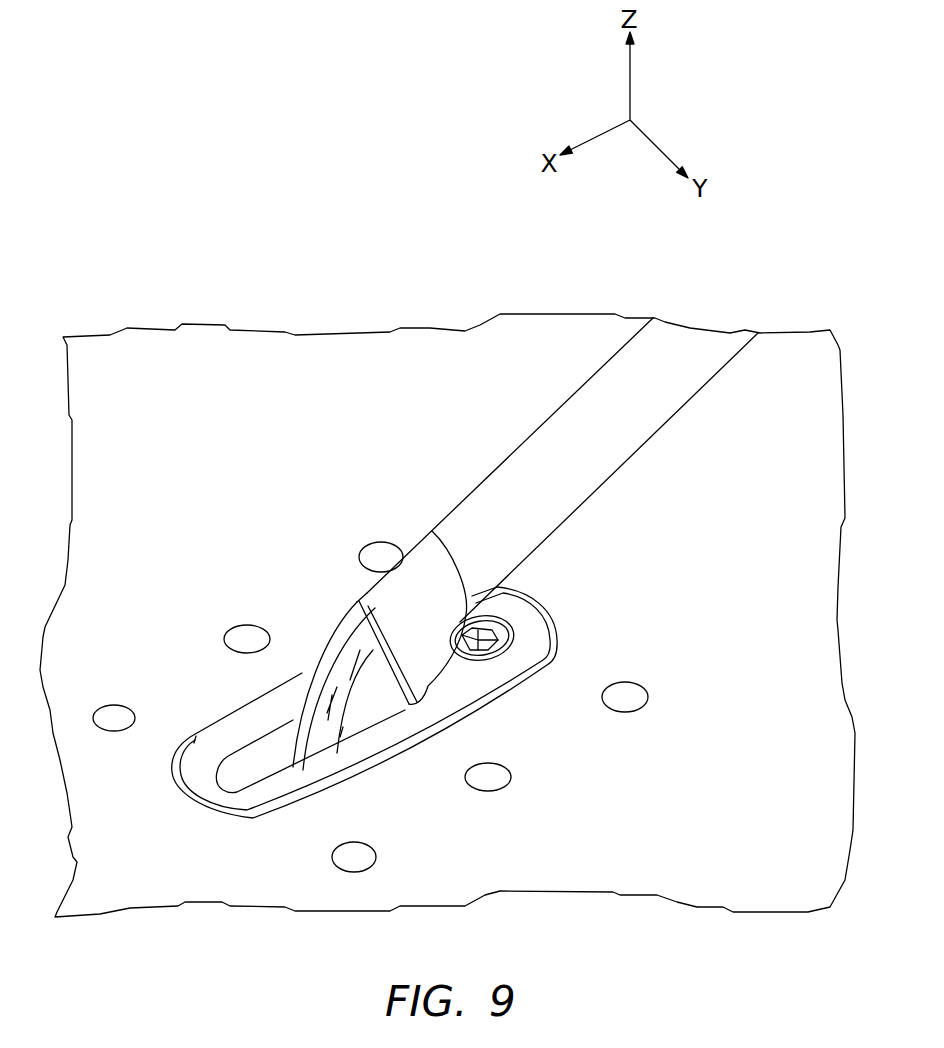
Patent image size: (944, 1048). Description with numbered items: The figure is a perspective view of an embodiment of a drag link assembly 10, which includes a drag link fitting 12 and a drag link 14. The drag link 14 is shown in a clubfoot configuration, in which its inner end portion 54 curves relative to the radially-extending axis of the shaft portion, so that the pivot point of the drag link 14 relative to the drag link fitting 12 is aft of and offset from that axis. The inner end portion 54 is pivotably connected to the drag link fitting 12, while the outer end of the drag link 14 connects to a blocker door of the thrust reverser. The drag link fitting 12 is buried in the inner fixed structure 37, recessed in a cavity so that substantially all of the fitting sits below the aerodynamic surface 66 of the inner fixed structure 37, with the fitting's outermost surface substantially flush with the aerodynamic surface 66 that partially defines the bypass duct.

The drag link assembly 10 is at (333, 492).
The drag link fitting 12 is at (211, 690).
The drag link 14 is at (481, 463).
The inner fixed structure 37 is at (676, 672).
The inner end portion 54 is at (382, 712).
The aerodynamic surface 66 is at (712, 737).